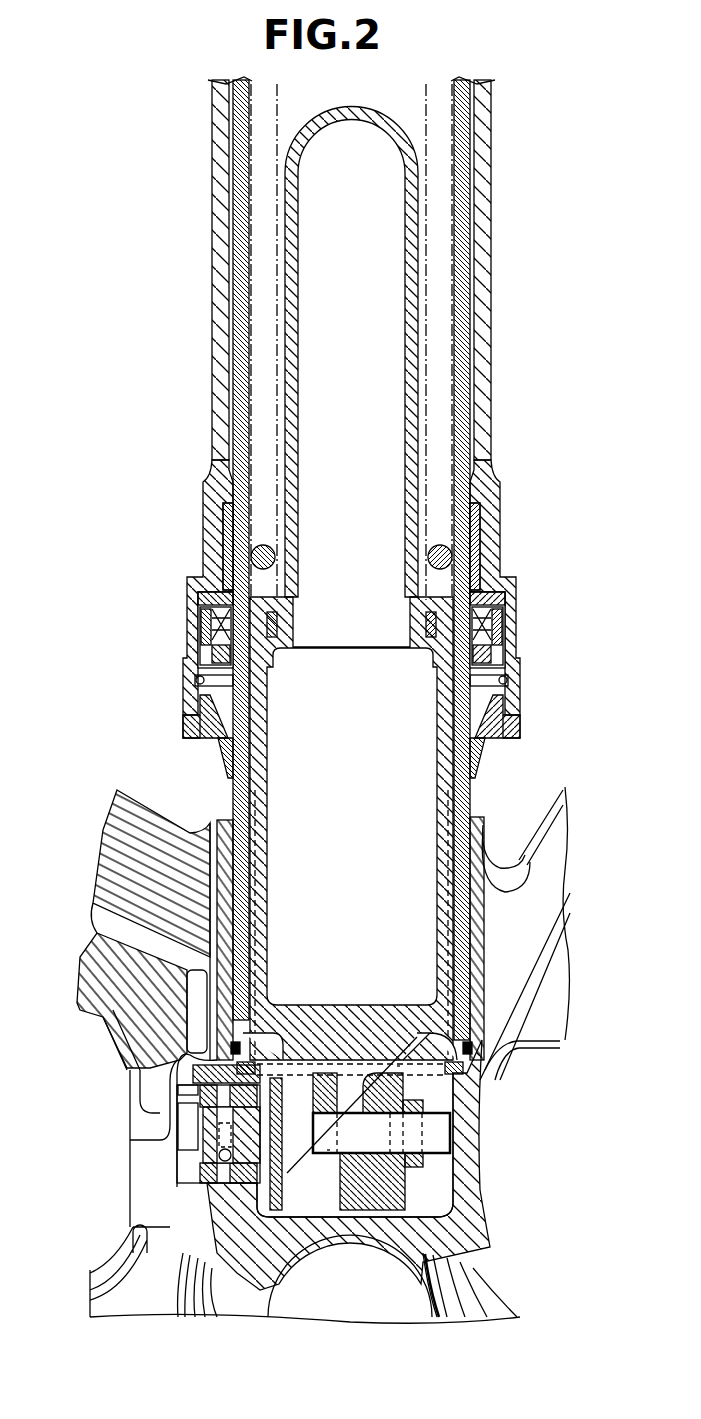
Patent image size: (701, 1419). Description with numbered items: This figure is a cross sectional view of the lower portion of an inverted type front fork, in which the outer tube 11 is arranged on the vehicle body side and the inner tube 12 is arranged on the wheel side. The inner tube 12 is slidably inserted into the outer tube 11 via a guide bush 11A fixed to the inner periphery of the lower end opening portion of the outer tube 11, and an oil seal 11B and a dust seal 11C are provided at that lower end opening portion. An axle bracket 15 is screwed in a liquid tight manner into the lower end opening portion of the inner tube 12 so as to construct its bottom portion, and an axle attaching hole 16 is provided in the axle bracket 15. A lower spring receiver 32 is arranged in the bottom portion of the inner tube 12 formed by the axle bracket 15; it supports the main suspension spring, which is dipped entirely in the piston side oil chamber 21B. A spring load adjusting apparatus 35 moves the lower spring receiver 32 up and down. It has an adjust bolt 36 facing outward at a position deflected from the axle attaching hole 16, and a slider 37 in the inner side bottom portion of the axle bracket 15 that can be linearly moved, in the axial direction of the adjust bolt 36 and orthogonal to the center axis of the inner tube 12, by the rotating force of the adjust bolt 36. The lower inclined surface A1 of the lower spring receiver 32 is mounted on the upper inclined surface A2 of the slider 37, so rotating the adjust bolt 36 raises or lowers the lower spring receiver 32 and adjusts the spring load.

The outer tube 11 is at (222, 163).
The inner tube 12 is at (237, 210).
The piston side oil chamber 21B is at (298, 97).
The guide bush 11A is at (223, 541).
The oil seal 11B is at (203, 650).
The dust seal 11C is at (213, 743).
The lower spring receiver 32 is at (260, 743).
The axle bracket 15 is at (122, 812).
The spring load adjusting apparatus 35 is at (171, 1178).
The adjust bolt 36 is at (435, 1132).
The slider 37 is at (375, 1185).
The axle attaching hole 16 is at (290, 1277).
The lower inclined surface A1 is at (327, 1150).
The upper inclined surface A2 is at (365, 1098).